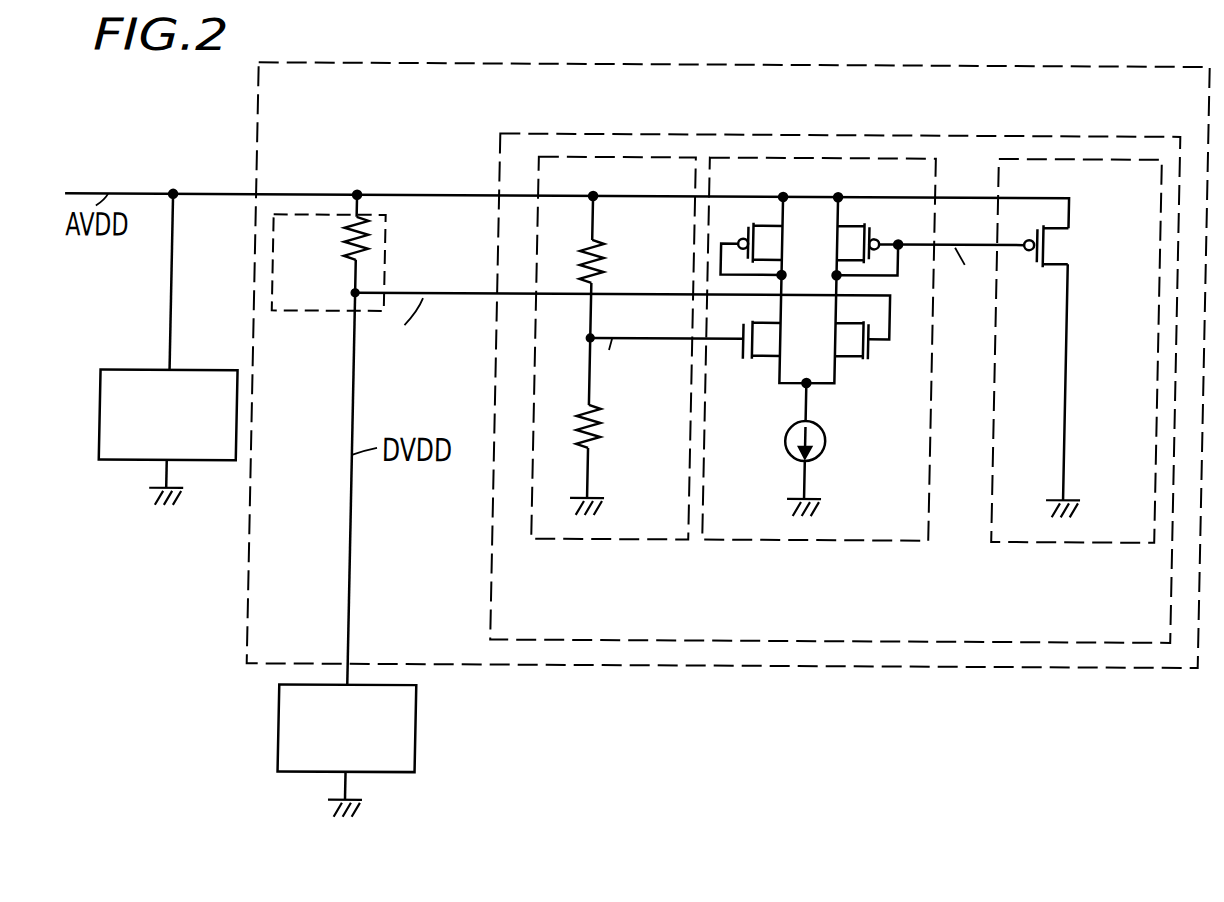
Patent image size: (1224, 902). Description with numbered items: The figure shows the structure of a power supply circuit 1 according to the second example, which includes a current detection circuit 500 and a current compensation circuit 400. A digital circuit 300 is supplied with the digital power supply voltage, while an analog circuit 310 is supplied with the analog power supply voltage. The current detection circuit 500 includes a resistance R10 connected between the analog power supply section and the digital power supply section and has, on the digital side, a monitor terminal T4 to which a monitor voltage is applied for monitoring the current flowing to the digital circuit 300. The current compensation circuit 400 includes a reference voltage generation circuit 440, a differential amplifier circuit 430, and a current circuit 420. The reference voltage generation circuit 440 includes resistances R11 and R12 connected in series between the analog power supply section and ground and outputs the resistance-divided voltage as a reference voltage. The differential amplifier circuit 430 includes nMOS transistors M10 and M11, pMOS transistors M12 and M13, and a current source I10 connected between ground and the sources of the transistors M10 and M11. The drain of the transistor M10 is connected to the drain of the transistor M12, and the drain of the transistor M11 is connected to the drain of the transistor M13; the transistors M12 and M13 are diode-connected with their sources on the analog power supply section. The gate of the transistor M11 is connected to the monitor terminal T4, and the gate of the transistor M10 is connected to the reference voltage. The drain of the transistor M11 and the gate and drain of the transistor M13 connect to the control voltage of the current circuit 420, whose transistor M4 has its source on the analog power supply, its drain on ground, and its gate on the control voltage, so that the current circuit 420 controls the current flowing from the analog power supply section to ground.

The power supply circuit 1 is at (724, 666).
The digital circuit 300 is at (300, 775).
The analog circuit 310 is at (123, 464).
The current compensation circuit 400 is at (978, 135).
The current circuit 420 is at (1075, 398).
The differential amplifier circuit 430 is at (759, 394).
The reference voltage generation circuit 440 is at (612, 394).
The current detection circuit 500 is at (358, 214).
The resistance R10 is at (324, 242).
The resistance R11 is at (566, 262).
The resistance R12 is at (569, 424).
The monitor terminal T4 is at (359, 291).
The transistor M4 is at (1053, 245).
The nMOS transistor M10 is at (754, 338).
The nMOS transistor M11 is at (857, 341).
The pMOS transistor M12 is at (754, 244).
The pMOS transistor M13 is at (857, 243).
The current source I10 is at (825, 437).